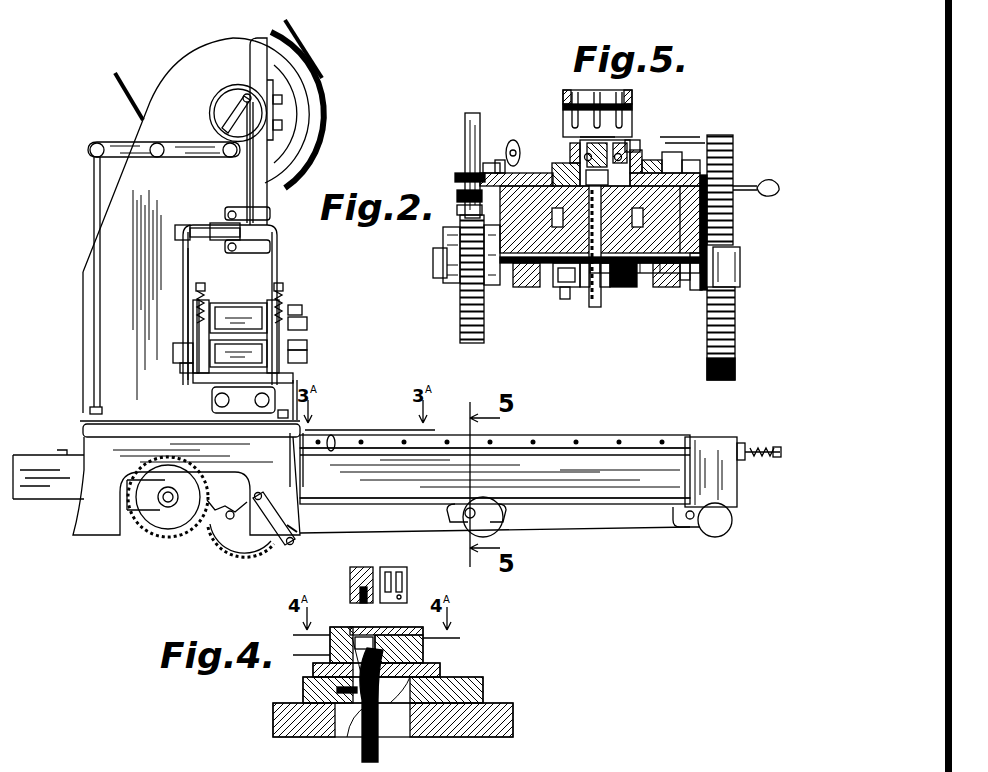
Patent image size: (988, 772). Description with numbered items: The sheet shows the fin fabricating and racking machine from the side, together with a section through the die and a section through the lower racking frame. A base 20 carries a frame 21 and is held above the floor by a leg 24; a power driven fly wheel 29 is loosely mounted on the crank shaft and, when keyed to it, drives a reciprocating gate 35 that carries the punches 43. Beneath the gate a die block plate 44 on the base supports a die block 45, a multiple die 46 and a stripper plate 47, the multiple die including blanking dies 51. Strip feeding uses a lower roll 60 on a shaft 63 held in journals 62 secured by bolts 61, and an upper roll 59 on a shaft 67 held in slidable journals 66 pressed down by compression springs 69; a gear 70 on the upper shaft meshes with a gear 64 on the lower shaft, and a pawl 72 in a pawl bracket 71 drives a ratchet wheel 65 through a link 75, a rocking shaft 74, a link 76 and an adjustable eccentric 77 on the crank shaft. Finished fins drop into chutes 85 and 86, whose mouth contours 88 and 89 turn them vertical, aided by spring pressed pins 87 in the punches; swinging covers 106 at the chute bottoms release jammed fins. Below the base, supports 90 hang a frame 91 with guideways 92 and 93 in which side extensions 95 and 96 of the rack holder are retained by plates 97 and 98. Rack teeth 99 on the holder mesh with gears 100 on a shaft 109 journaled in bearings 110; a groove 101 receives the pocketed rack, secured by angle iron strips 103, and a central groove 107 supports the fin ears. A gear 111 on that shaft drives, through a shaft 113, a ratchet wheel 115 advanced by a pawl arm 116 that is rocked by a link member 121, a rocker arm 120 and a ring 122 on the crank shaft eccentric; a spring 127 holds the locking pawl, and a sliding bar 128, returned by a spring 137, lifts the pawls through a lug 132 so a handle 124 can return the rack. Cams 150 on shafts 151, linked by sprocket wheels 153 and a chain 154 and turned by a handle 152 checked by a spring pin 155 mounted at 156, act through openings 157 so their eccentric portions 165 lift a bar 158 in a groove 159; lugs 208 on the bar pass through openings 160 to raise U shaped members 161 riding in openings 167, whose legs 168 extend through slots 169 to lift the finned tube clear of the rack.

In FIG. 4, the base 20 is at (513, 717).
In FIG. 2, the frame 21 is at (195, 53).
In FIG. 2, the standard or leg 24 is at (84, 538).
In FIG. 2, the power driven fly wheel 29 is at (305, 68).
In FIG. 2, the reciprocating gate 35 is at (276, 257).
In FIG. 4, the punches 43 is at (407, 582).
In FIG. 4, the die block plate 44 is at (483, 697).
In FIG. 4, the die block 45 is at (440, 670).
In FIG. 4, the multiple die 46 is at (402, 645).
In FIG. 4, the stripper plate 47 is at (407, 635).
In FIG. 4, the blanking dies 51 is at (368, 628).
In FIG. 2, the roll 59 is at (246, 312).
In FIG. 2, the roll 60 is at (243, 400).
In FIG. 2, the bolts 61 is at (201, 289).
In FIG. 2, the journals 62 is at (300, 380).
In FIG. 2, the shaft 63 is at (307, 358).
In FIG. 2, the gear 64 is at (307, 345).
In FIG. 2, the ratchet wheel 65 is at (196, 377).
In FIG. 2, the journals 66 is at (300, 305).
In FIG. 2, the shaft 67 is at (307, 324).
In FIG. 2, the compression springs 69 is at (288, 300).
In FIG. 2, the gear 70 is at (302, 310).
In FIG. 2, the pawl bracket 71 is at (185, 345).
In FIG. 2, the pawl 72 is at (180, 366).
In FIG. 2, the rocking shaft 74 is at (220, 230).
In FIG. 2, the link 75 is at (185, 283).
In FIG. 2, the link 76 is at (248, 190).
In FIG. 2, the adjustable eccentric 77 is at (258, 113).
In FIG. 5, the chute 85 is at (568, 92).
In FIG. 4, the chute 85 is at (367, 743).
In FIG. 5, the chute 86 is at (630, 92).
In FIG. 4, the chute 86 is at (397, 720).
In FIG. 4, the spring pressed strippers or pins 87 is at (358, 605).
In FIG. 4, the chute mouth contour 88 is at (423, 652).
In FIG. 4, the chute mouth contour 89 is at (357, 733).
In FIG. 2, the supports 90 is at (84, 493).
In FIG. 5, the frame 91 is at (740, 230).
In FIG. 5, the guideway 92 is at (710, 137).
In FIG. 5, the guideway 93 is at (495, 160).
In FIG. 5, the side extension 95 is at (733, 212).
In FIG. 5, the side extension 96 is at (459, 214).
In FIG. 5, the plate 97 is at (682, 177).
In FIG. 5, the plate 98 is at (515, 141).
In FIG. 5, the rack teeth 99 is at (723, 240).
In FIG. 5, the gears 100 is at (557, 333).
In FIG. 5, the groove 101 is at (670, 143).
In FIG. 5, the strips of angle iron 103 is at (665, 137).
In FIG. 5, the spring controlled swinging covers 106 is at (595, 95).
In FIG. 5, the groove 107 is at (635, 145).
In FIG. 5, the shaft 109 is at (665, 296).
In FIG. 5, the bearings 110 is at (457, 283).
In FIG. 2, the gear 111 is at (284, 552).
In FIG. 5, the gear 111 is at (720, 380).
In FIG. 2, the shaft 113 is at (170, 504).
In FIG. 5, the shaft 113 is at (440, 268).
In FIG. 2, the ratchet wheel 115 is at (158, 527).
In FIG. 5, the ratchet wheel 115 is at (465, 328).
In FIG. 2, the pawl bracket or arm 116 is at (138, 505).
In FIG. 5, the pawl bracket or arm 116 is at (450, 242).
In FIG. 2, the rocker arm 120 is at (123, 147).
In FIG. 2, the link member 121 is at (94, 280).
In FIG. 5, the link member 121 is at (465, 147).
In FIG. 2, the ring 122 is at (235, 87).
In FIG. 2, the handle 124 is at (272, 548).
In FIG. 5, the spring 127 is at (463, 197).
In FIG. 2, the sliding bar 128 is at (343, 442).
In FIG. 5, the sliding bar 128 is at (463, 182).
In FIG. 5, the pin or lug 132 is at (492, 117).
In FIG. 2, the spring 137 is at (315, 447).
In FIG. 2, the cams 150 is at (240, 553).
In FIG. 5, the cams 150 is at (598, 300).
In FIG. 2, the shafts 151 is at (227, 521).
In FIG. 5, the shafts 151 is at (740, 278).
In FIG. 5, the handle 152 is at (765, 180).
In FIG. 2, the sprocket wheels 153 is at (217, 512).
In FIG. 5, the sprocket wheels 153 is at (565, 312).
In FIG. 2, the chain 154 is at (360, 533).
In FIG. 5, the spring pin 155 is at (682, 157).
In FIG. 5, the spring pin mounting 156 is at (691, 166).
In FIG. 5, the openings 157 is at (580, 300).
In FIG. 5, the bar 158 is at (520, 300).
In FIG. 5, the groove 159 is at (548, 300).
In FIG. 5, the openings 160 is at (655, 170).
In FIG. 5, the U shaped members 161 is at (590, 238).
In FIG. 5, the eccentric portion 165 is at (620, 298).
In FIG. 5, the openings 167 is at (640, 153).
In FIG. 5, the leg portions 168 is at (562, 163).
In FIG. 5, the slots 169 is at (570, 147).
In FIG. 5, the upstanding lugs 208 is at (514, 166).